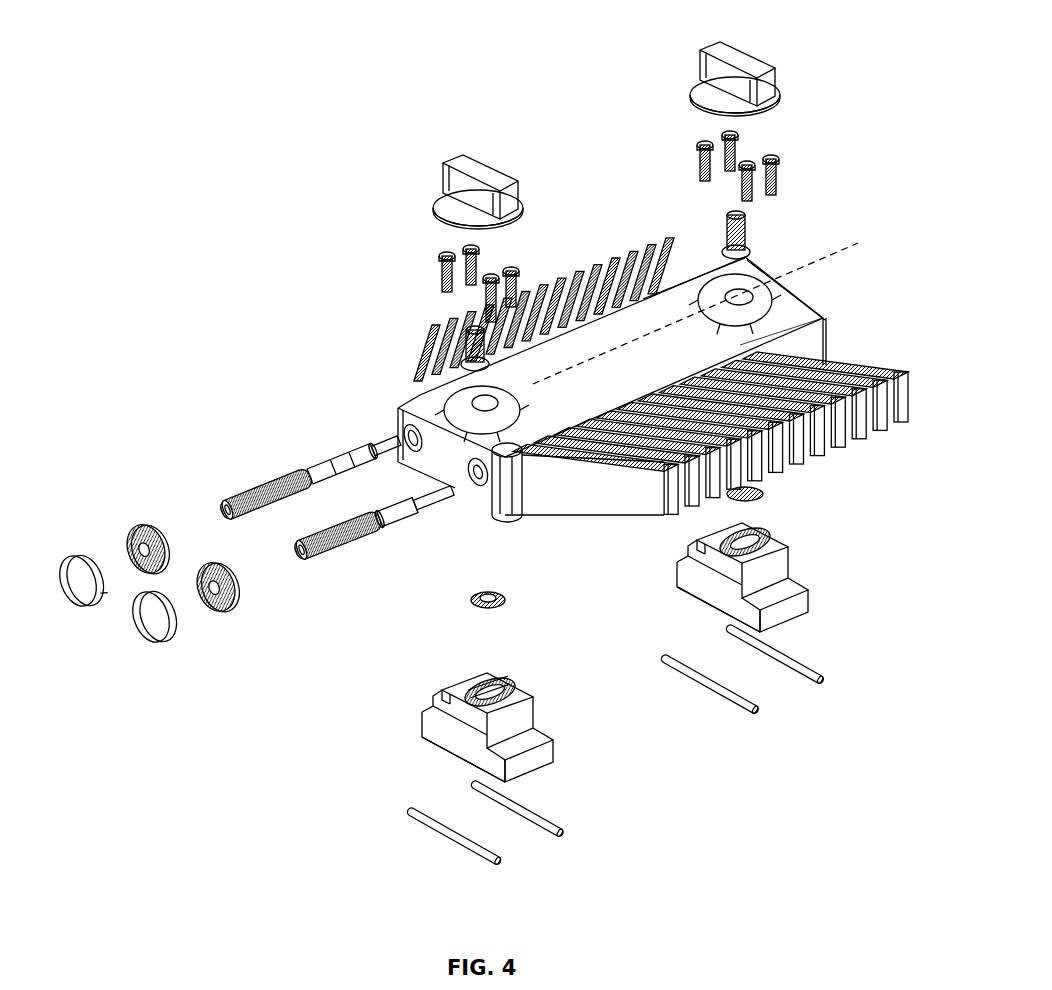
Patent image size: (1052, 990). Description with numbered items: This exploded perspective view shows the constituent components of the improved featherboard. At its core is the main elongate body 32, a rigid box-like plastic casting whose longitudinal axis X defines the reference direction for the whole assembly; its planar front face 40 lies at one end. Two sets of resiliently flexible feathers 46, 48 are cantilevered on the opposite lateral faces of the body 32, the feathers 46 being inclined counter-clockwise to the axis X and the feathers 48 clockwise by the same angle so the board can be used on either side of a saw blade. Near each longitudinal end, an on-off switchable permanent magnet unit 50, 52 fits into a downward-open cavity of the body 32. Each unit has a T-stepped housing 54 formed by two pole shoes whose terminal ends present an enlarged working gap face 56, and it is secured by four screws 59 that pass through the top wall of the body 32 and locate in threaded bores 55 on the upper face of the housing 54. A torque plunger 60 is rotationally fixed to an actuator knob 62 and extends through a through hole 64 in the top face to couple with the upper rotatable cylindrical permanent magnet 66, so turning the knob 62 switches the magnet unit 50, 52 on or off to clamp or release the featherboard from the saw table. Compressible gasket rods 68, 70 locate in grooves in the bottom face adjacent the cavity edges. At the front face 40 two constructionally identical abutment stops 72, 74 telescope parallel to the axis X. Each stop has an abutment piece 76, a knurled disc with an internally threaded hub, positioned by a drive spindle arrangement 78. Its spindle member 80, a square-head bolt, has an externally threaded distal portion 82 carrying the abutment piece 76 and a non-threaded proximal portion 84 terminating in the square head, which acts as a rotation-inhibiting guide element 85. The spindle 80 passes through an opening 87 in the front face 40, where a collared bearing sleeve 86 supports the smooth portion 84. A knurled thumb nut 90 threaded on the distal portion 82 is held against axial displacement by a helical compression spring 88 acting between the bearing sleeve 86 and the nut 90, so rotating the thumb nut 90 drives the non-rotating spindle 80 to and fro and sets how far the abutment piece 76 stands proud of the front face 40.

The longitudinal axis X is at (858, 243).
The main elongate body 32 is at (635, 390).
The front face 40 is at (480, 505).
The feathers 46 is at (605, 246).
The feathers 48 is at (855, 450).
The on-off switchable permanent magnet unit 50 is at (800, 560).
The on-off switchable permanent magnet unit 52 is at (437, 758).
The T-stepped housing 54 is at (548, 705).
The threaded bores 55 is at (483, 670).
The working gap face 56 is at (540, 778).
The screws 59 is at (432, 270).
The torque plunger 60 is at (462, 352).
The actuator knob 62 is at (742, 63).
The through hole 64 is at (455, 385).
The rotatable cylindrical permanent magnet 66 is at (470, 683).
The compressible gasket rod 68 is at (822, 682).
The compressible gasket rod 70 is at (565, 840).
The abutment stop 72 is at (58, 478).
The abutment stop 74 is at (183, 683).
The abutment piece 76 is at (70, 590).
The drive spindle arrangement 78 is at (203, 612).
The spindle member 80 is at (305, 463).
The externally threaded distal portion 82 is at (257, 485).
The non-threaded proximal portion 84 is at (392, 432).
The rotation-inhibiting guide element 85 is at (400, 428).
The collared bearing sleeve 86 is at (330, 467).
The opening 87 is at (516, 490).
The helical compression spring 88 is at (250, 530).
The knurled thumb nut 90 is at (160, 522).